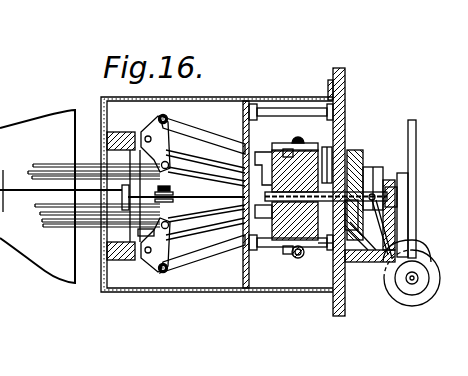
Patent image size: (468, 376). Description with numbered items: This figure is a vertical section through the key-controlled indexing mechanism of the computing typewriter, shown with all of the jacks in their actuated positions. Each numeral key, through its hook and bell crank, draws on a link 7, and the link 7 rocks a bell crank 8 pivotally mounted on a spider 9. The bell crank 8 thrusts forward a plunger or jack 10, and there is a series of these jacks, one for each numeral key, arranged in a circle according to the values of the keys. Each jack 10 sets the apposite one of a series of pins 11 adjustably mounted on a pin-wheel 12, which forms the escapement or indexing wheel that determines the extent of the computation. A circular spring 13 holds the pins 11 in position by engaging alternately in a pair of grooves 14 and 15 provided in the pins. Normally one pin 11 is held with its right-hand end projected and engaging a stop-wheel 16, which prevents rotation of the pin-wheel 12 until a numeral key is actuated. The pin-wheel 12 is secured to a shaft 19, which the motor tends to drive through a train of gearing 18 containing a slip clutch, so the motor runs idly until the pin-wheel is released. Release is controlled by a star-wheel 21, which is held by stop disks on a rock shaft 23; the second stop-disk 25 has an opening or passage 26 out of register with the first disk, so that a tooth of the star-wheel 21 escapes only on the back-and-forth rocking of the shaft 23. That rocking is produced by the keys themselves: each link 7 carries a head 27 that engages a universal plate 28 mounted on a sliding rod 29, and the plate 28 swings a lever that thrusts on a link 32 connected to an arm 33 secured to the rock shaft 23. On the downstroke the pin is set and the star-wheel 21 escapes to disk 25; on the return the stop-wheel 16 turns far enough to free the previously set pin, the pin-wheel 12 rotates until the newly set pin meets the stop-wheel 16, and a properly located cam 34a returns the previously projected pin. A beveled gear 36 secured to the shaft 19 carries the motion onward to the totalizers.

The link 7 is at (50, 171).
The bell crank 8 is at (170, 170).
The spider 9 is at (133, 136).
The plunger or jack 10 is at (208, 147).
The pin 11 is at (269, 182).
The pin-wheel 12 is at (287, 147).
The circular spring 13 is at (296, 259).
The groove 14 is at (308, 254).
The groove 15 is at (283, 248).
The stop-wheel 16 is at (314, 150).
The train of gearing 18 is at (357, 160).
The shaft 19 is at (380, 190).
The star-wheel 21 is at (417, 153).
The rock shaft 23 is at (428, 278).
The second stop-disk 25 is at (430, 293).
The opening or passage 26 is at (417, 273).
The head 27 is at (180, 233).
The plate 28 is at (106, 234).
The rod 29 is at (33, 197).
The link 32 is at (195, 199).
The arm 33 is at (413, 250).
The cam 34a is at (343, 137).
The beveled gear 36 is at (360, 257).